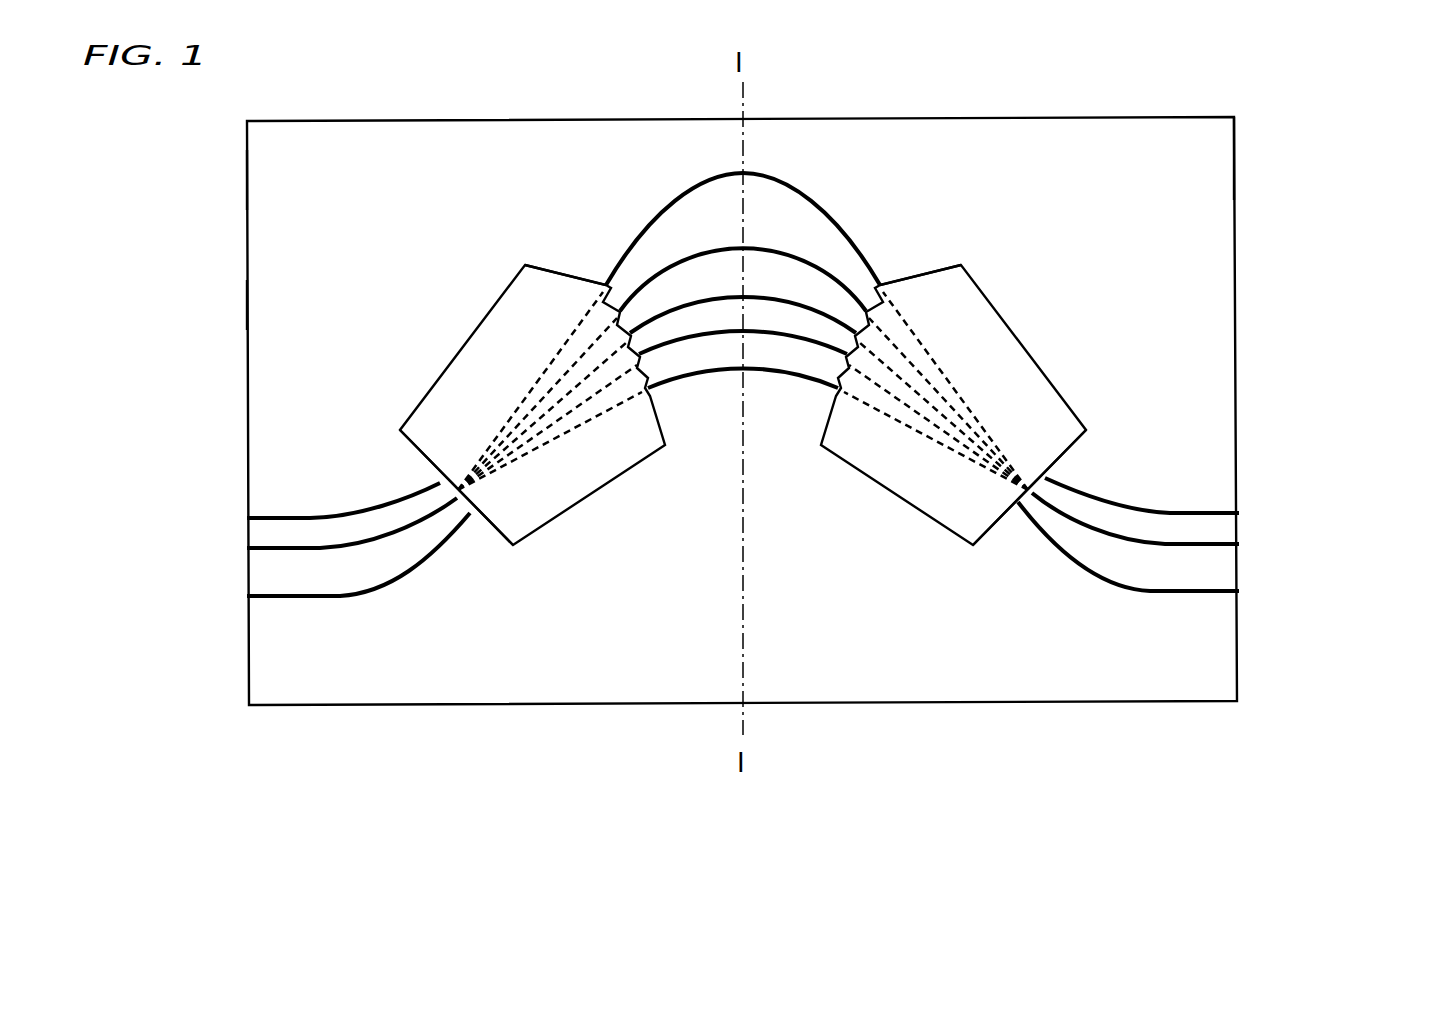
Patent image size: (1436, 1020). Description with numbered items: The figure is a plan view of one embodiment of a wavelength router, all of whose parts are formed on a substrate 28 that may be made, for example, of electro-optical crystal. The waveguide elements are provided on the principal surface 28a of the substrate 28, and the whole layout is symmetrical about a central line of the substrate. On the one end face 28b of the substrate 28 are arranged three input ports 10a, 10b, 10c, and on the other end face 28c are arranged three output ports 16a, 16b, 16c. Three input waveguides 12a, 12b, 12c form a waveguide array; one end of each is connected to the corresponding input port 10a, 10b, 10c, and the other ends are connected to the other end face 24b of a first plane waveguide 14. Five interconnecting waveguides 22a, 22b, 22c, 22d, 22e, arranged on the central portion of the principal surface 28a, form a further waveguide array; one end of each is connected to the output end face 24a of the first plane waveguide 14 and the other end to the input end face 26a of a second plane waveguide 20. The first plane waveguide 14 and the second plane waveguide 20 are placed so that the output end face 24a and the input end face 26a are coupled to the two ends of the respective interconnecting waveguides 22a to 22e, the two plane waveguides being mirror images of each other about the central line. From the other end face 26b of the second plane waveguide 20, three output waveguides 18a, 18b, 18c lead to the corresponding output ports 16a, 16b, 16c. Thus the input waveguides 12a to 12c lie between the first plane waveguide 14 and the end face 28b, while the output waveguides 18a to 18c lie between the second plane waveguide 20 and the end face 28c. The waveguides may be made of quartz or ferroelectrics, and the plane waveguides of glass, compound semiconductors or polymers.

The input port 10a is at (247, 597).
The input port 10b is at (247, 548).
The input port 10c is at (247, 519).
The input waveguide 12a is at (313, 597).
The input waveguide 12b is at (287, 550).
The input waveguide 12c is at (300, 518).
The first plane waveguide 14 is at (553, 483).
The output port 16a is at (1236, 591).
The output port 16b is at (1236, 544).
The output port 16c is at (1236, 513).
The output waveguide 18a is at (1163, 593).
The output waveguide 18b is at (1173, 548).
The output waveguide 18c is at (1127, 512).
The second plane waveguide 20 is at (953, 510).
The interconnecting waveguide 22a is at (768, 370).
The interconnecting waveguide 22b is at (813, 343).
The interconnecting waveguide 22c is at (767, 297).
The interconnecting waveguide 22d is at (690, 250).
The interconnecting waveguide 22e is at (633, 232).
The output end face 24a is at (551, 270).
The other end face 24b is at (488, 533).
The input end face 26a is at (922, 268).
The other end face 26b is at (1074, 441).
The substrate 28 is at (298, 120).
The principal surface 28a is at (293, 174).
The one end face 28b is at (247, 306).
The other end face 28c is at (1240, 156).